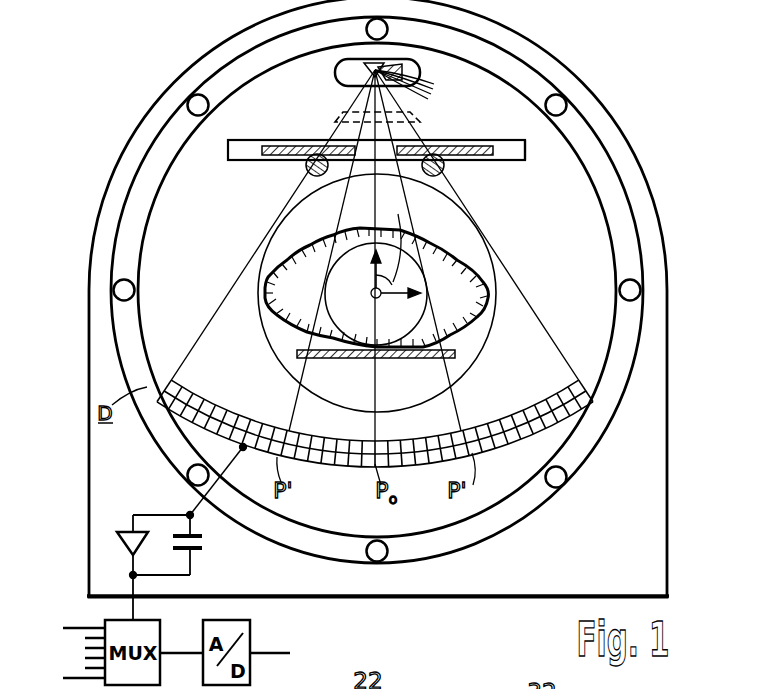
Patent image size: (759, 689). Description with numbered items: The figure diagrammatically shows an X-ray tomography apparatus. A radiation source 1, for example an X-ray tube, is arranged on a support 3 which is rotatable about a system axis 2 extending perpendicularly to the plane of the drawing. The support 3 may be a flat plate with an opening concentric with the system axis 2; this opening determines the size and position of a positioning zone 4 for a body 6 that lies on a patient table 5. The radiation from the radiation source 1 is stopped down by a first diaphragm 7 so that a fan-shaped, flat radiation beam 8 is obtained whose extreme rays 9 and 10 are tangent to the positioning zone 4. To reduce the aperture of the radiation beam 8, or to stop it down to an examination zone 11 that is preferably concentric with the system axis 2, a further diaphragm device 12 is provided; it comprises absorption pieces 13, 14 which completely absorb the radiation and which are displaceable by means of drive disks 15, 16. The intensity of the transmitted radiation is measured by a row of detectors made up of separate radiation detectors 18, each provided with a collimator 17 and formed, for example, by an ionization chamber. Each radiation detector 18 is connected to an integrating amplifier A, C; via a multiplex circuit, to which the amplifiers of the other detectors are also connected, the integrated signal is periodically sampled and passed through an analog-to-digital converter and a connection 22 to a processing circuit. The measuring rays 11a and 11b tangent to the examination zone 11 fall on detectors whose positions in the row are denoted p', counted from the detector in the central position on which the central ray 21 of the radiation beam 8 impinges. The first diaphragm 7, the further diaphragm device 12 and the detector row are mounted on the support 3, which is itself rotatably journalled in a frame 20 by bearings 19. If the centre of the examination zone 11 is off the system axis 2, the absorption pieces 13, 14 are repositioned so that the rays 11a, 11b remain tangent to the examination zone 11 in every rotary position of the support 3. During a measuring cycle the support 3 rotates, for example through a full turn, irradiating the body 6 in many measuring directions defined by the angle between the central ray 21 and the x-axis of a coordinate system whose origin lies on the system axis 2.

The radiation source 1 is at (337, 60).
The system axis 2 is at (370, 296).
The support 3 is at (575, 200).
The positioning zone 4 is at (483, 343).
The patient table 5 is at (317, 358).
The body 6 is at (452, 248).
The first diaphragm 7 is at (337, 113).
The radiation beam 8 is at (432, 90).
The extreme ray 9 is at (194, 345).
The extreme ray 10 is at (556, 345).
The examination zone 11 is at (418, 275).
The measuring ray 11a is at (292, 403).
The measuring ray 11b is at (460, 403).
The further diaphragm device 12 is at (502, 148).
The absorption piece 13 is at (263, 148).
The absorption piece 14 is at (514, 161).
The drive disk 15 is at (310, 164).
The drive disk 16 is at (445, 167).
The collimator 17 is at (205, 402).
The radiation detector 18 is at (362, 464).
The bearing 19 is at (564, 485).
The frame 20 is at (103, 478).
The central ray 21 is at (377, 388).
The connection 22 is at (273, 652).
The integrating amplifier A is at (127, 532).
The capacitor of integrating amplifier C is at (203, 549).